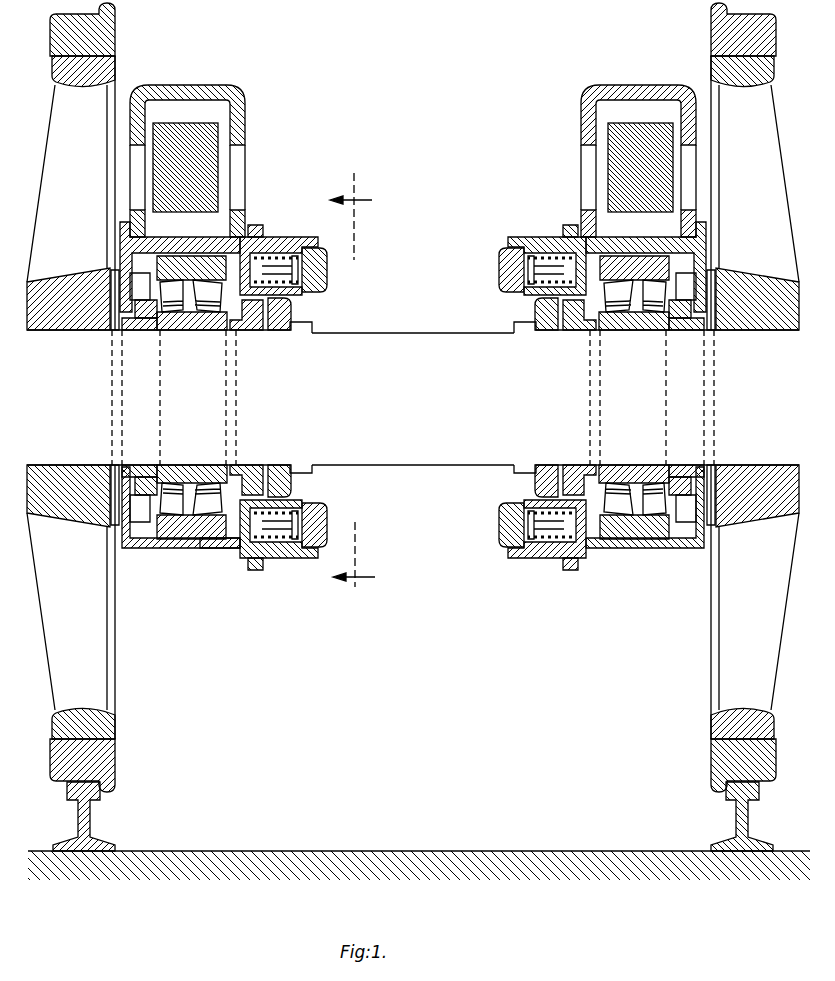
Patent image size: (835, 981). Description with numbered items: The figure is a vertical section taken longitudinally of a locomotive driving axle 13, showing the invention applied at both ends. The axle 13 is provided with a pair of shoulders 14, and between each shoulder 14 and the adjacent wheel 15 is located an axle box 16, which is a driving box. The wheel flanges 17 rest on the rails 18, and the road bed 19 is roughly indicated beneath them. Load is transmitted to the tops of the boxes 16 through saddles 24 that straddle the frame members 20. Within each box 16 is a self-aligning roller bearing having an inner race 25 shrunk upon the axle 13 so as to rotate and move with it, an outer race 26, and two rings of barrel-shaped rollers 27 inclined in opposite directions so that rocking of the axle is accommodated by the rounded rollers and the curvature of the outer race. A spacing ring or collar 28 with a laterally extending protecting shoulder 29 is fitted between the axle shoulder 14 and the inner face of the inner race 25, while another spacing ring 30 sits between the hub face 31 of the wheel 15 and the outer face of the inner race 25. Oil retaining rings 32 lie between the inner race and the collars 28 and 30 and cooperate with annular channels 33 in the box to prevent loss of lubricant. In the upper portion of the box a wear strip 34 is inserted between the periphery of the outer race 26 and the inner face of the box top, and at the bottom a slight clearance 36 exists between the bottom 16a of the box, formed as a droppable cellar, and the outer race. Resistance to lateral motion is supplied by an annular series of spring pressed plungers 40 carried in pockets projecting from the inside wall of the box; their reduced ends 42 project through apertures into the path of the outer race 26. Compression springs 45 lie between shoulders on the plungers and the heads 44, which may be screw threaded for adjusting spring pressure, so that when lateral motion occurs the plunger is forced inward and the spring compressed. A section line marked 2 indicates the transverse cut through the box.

The section line of FIG. 2 is at (352, 387).
The axle 13 is at (413, 399).
The shoulders 14 is at (305, 385).
The wheels 15 is at (97, 677).
The axle box 16 is at (180, 243).
The bottom of the box 16a is at (155, 547).
The wheel flanges 17 is at (118, 787).
The rails 18 is at (90, 820).
The road bed 19 is at (373, 855).
The frame members 20 is at (182, 125).
The saddles 24 is at (236, 127).
The inner race 25 is at (182, 467).
The outer race 26 is at (197, 533).
The barrel-shaped rollers 27 is at (205, 314).
The spacing ring or collar 28 is at (262, 334).
The protecting shoulder 29 is at (292, 311).
The spacing ring 30 is at (147, 333).
The hub face 31 is at (98, 333).
The oil retaining rings 32 is at (134, 273).
The annular channels 33 is at (128, 478).
The wear strip 34 is at (218, 256).
The clearance 36 is at (215, 550).
The spring pressed plungers 40 is at (318, 251).
The reduced ends 42 is at (262, 240).
The heads 44 is at (328, 264).
The compression springs 45 is at (285, 552).